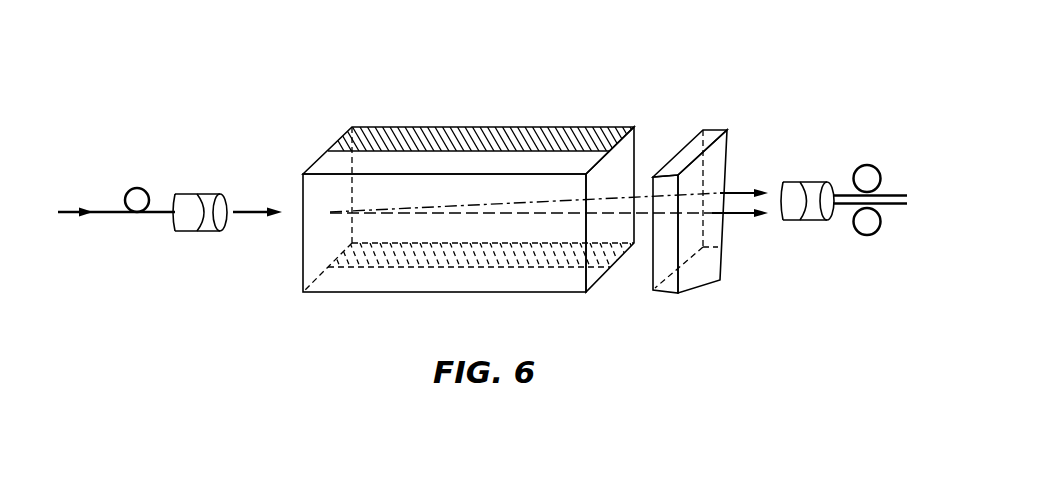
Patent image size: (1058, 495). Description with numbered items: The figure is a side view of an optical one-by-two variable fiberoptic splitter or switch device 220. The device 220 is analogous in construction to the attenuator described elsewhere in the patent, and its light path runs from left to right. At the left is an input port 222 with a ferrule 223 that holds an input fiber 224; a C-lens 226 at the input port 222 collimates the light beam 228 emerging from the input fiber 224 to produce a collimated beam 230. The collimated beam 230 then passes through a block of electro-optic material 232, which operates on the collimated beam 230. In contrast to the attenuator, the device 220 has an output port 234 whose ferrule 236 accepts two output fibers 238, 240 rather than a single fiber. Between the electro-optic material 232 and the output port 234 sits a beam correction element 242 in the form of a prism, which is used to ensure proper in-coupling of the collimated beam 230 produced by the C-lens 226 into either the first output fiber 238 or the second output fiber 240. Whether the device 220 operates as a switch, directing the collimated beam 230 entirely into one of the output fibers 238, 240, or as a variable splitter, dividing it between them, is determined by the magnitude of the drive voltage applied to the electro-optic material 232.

The optical 1×2 variable fiberoptic splitter or switch device 220 is at (158, 47).
The input port 222 is at (195, 158).
The ferrule 223 is at (177, 233).
The input fiber 224 is at (133, 186).
The C-lens 226 is at (222, 233).
The light beam 228 is at (65, 216).
The collimated beam 230 is at (260, 205).
The electro-optic material 232 is at (600, 280).
The output port 234 is at (791, 117).
The ferrule 236 is at (827, 222).
The output fiber 238 is at (867, 164).
The output fiber 240 is at (873, 236).
The beam correction element 242 is at (707, 128).